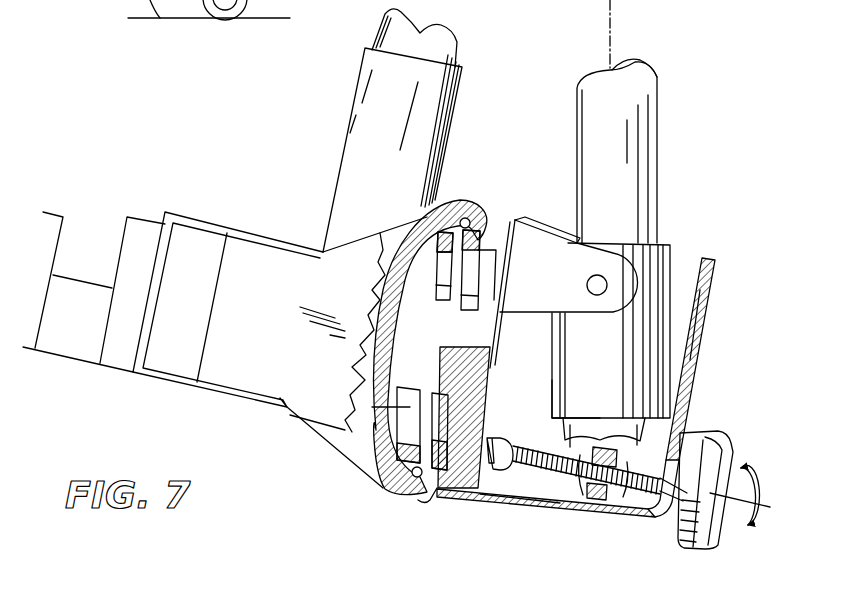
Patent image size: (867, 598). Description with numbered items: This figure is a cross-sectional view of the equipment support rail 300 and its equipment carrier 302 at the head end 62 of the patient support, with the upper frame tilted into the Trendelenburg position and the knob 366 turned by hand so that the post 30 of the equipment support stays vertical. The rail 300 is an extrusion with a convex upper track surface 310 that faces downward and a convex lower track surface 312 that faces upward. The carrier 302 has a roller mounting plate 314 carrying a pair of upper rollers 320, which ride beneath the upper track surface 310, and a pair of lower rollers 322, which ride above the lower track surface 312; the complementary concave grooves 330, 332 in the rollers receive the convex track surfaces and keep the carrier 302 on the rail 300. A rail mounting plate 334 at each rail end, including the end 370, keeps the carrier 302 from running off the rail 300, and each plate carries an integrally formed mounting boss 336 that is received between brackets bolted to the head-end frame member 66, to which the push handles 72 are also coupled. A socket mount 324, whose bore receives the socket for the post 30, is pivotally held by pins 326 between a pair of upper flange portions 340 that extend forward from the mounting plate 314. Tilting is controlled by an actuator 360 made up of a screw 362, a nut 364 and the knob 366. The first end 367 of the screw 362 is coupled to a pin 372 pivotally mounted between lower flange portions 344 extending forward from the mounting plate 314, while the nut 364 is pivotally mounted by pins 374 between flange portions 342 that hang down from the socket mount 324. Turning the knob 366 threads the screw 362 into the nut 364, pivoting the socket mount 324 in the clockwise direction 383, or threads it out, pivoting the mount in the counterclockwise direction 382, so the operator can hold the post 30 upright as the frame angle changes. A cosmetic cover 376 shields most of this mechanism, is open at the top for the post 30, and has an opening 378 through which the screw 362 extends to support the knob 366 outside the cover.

The post 30 is at (627, 178).
The head end 62 is at (736, 186).
The head-end frame member 66 is at (237, 230).
The push handles 72 is at (383, 107).
The support rail 300 is at (377, 432).
The equipment carrier 302 is at (762, 308).
The upper track surface 310 is at (420, 213).
The lower track surface 312 is at (343, 420).
The roller mounting plate 314 is at (470, 330).
The upper rollers 320 is at (397, 240).
The lower rollers 322 is at (350, 397).
The socket mount 324 is at (657, 273).
The pins 326 is at (588, 288).
The concave groove 330 is at (450, 307).
The concave groove 332 is at (432, 408).
The rail mounting plates 334 is at (300, 350).
The mounting bosses 336 is at (235, 277).
The upper flange portions 340 is at (541, 248).
The flange portions 342 is at (625, 372).
The lower flange portions 344 is at (485, 503).
The actuator 360 is at (563, 486).
The screw 362 is at (530, 503).
The nut 364 is at (613, 517).
The knob 366 is at (717, 445).
The first end 367 is at (520, 440).
The end of rail 370 is at (680, 493).
The pin 372 is at (467, 505).
The pins 374 is at (587, 437).
The cosmetic cover 376 is at (693, 367).
The opening 378 is at (677, 460).
The counterclockwise direction 382 is at (503, 71).
The clockwise direction 383 is at (729, 69).